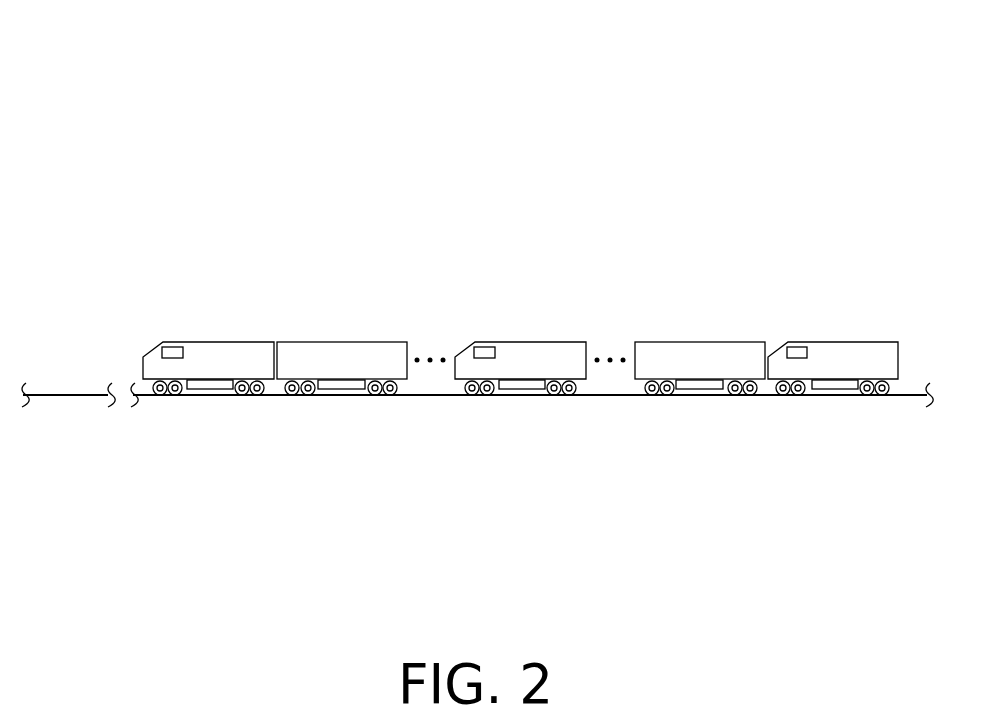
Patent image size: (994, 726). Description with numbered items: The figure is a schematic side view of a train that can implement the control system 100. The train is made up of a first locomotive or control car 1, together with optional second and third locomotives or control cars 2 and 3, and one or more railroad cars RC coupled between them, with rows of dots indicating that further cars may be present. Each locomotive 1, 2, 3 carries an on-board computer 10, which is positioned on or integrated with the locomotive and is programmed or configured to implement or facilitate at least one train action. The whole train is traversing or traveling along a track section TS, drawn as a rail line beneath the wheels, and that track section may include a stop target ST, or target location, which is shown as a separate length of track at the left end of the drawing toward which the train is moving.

The control system 100 is at (491, 314).
The on-board computer 10 is at (157, 349).
The first locomotive 1 is at (233, 342).
The second locomotive 2 is at (555, 342).
The third locomotive 3 is at (874, 342).
The stop target ST is at (65, 395).
The track section TS is at (907, 395).
The railroad car RC is at (718, 365).